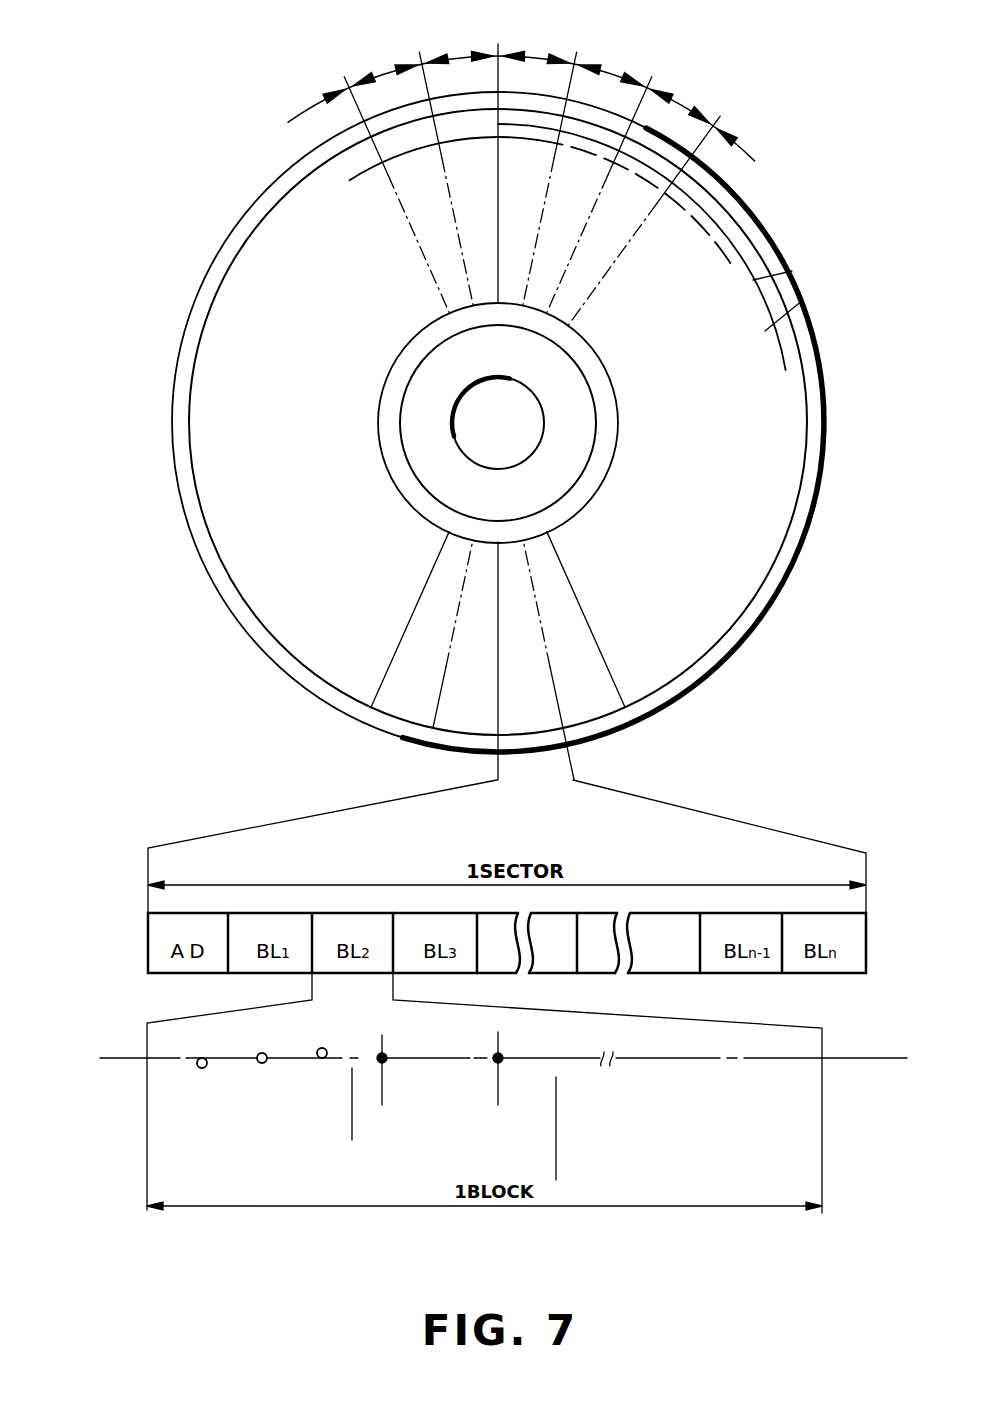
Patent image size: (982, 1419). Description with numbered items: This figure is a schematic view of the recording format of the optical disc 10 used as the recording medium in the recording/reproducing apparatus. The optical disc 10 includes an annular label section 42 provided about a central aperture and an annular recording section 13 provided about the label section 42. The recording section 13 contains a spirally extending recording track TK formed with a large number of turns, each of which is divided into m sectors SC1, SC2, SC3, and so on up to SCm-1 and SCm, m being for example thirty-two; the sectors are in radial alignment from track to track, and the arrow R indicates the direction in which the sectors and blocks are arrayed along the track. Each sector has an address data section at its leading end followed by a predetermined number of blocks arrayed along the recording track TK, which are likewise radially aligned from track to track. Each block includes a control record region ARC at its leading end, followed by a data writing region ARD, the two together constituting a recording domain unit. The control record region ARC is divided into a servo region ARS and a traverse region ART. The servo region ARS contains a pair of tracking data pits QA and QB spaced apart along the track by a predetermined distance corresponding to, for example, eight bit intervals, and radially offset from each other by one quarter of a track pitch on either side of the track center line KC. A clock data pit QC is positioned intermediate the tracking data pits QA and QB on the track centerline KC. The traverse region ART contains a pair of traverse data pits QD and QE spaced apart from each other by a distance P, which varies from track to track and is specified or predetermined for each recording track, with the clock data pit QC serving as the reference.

The optical disc 10 is at (740, 668).
The recording section 13 is at (767, 548).
The label section 42 is at (413, 412).
The recording track TK is at (803, 300).
The sector SC1 is at (540, 55).
The sector SC2 is at (623, 70).
The sector SC3 is at (697, 100).
The sector SCm is at (462, 55).
The sector SCm-1 is at (380, 73).
The rotation direction R is at (850, 350).
The track center line KC is at (483, 1062).
The tracking data pit QA is at (206, 1059).
The tracking data pit QB is at (352, 1039).
The clock data pit QC is at (266, 1056).
The traverse data pit QD is at (386, 1056).
The traverse data pit QE is at (502, 1056).
The distance P is at (382, 1098).
The servo region ARS is at (352, 1134).
The traverse region ART is at (556, 1134).
The control record region ARC is at (556, 1170).
The data writing region ARD is at (822, 1170).